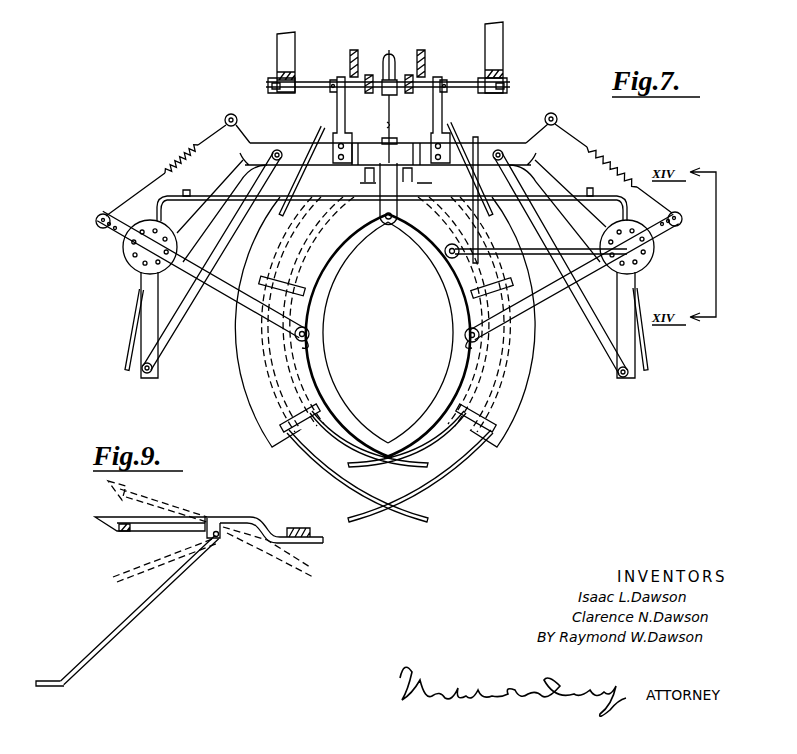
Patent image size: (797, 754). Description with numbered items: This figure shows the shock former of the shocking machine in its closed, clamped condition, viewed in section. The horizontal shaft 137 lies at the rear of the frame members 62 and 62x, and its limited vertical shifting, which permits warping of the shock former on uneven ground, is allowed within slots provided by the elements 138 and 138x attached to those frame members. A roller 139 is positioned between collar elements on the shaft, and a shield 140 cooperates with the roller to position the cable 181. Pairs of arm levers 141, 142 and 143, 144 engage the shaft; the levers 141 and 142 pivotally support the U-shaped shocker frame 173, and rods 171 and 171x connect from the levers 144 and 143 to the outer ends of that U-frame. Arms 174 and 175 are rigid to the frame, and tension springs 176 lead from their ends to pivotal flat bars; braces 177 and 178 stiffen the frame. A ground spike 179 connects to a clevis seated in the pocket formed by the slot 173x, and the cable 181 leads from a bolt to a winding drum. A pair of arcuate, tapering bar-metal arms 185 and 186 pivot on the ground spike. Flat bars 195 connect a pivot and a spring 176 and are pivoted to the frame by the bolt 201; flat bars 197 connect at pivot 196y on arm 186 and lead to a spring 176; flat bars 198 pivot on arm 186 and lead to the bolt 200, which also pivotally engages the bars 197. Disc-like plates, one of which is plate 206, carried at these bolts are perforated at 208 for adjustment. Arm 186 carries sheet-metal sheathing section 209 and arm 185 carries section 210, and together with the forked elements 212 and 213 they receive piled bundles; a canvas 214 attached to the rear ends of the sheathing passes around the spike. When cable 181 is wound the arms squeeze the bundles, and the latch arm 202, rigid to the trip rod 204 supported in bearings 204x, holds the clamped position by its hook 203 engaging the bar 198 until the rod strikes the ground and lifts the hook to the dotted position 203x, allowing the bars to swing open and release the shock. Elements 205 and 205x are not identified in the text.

In FIG. 7, the shaft 137 is at (464, 80).
In FIG. 7, the frame member 62x is at (272, 78).
In FIG. 7, the frame member 62 is at (503, 75).
In FIG. 7, the slot element 138x is at (270, 88).
In FIG. 7, the slot element 138 is at (506, 88).
In FIG. 7, the roller 139 is at (370, 44).
In FIG. 7, the shield 140 is at (421, 62).
In FIG. 7, the cable 181 is at (389, 55).
In FIG. 7, the ground spike 179 is at (387, 230).
In FIG. 7, the arm lever 144 is at (369, 93).
In FIG. 7, the arm lever 143 is at (409, 93).
In FIG. 7, the arm lever 142 is at (346, 136).
In FIG. 7, the arm lever 141 is at (432, 136).
In FIG. 7, the slot 173x is at (392, 163).
In FIG. 7, the U-shaped shocker frame element 173 is at (509, 123).
In FIG. 9, the U-shaped shocker frame element 173 is at (319, 522).
In FIG. 7, the arm 175 is at (230, 113).
In FIG. 7, the arm 174 is at (558, 108).
In FIG. 7, the tension spring 176 is at (162, 173).
In FIG. 7, the bearing 204x is at (187, 190).
In FIG. 7, the perforation 208 is at (626, 220).
In FIG. 7, the bolt 201 is at (128, 268).
In FIG. 7, the bolt 200 is at (652, 268).
In FIG. 7, the brace 178 is at (580, 284).
In FIG. 7, the strut 205 is at (649, 355).
In FIG. 9, the strut 205 is at (62, 688).
In FIG. 7, the flat bars 195 is at (106, 230).
In FIG. 7, the flat bars 197 is at (678, 213).
In FIG. 7, the disc-like plate 206 is at (655, 257).
In FIG. 7, the brace 177 is at (226, 237).
In FIG. 7, the rod 171x is at (192, 316).
In FIG. 7, the rod 171 is at (590, 326).
In FIG. 7, the flat bars 198 is at (575, 248).
In FIG. 9, the flat bars 198 is at (131, 530).
In FIG. 7, the pivot 196y is at (481, 347).
In FIG. 7, the sheathing section 210 is at (253, 410).
In FIG. 7, the canvas 214 is at (386, 314).
In FIG. 7, the sheathing section 209 is at (516, 408).
In FIG. 7, the arm 186 is at (448, 292).
In FIG. 7, the arm 185 is at (326, 368).
In FIG. 7, the forked element 213 is at (430, 494).
In FIG. 7, the forked element 212 is at (354, 524).
In FIG. 9, the hook 203 is at (108, 528).
In FIG. 9, the latch arm 202 is at (258, 506).
In FIG. 9, the trip rod 204 is at (218, 543).
In FIG. 9, the dotted position of hook 203x is at (108, 490).
In FIG. 9, the arm alternate position 205x is at (142, 560).